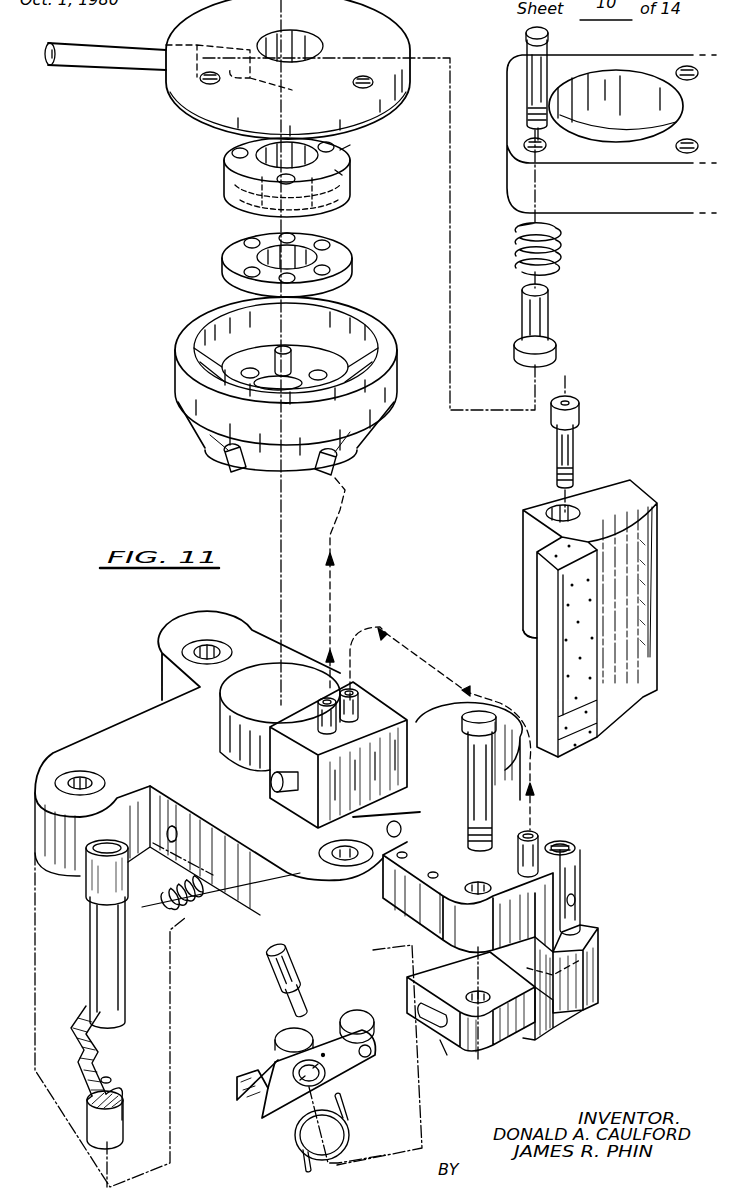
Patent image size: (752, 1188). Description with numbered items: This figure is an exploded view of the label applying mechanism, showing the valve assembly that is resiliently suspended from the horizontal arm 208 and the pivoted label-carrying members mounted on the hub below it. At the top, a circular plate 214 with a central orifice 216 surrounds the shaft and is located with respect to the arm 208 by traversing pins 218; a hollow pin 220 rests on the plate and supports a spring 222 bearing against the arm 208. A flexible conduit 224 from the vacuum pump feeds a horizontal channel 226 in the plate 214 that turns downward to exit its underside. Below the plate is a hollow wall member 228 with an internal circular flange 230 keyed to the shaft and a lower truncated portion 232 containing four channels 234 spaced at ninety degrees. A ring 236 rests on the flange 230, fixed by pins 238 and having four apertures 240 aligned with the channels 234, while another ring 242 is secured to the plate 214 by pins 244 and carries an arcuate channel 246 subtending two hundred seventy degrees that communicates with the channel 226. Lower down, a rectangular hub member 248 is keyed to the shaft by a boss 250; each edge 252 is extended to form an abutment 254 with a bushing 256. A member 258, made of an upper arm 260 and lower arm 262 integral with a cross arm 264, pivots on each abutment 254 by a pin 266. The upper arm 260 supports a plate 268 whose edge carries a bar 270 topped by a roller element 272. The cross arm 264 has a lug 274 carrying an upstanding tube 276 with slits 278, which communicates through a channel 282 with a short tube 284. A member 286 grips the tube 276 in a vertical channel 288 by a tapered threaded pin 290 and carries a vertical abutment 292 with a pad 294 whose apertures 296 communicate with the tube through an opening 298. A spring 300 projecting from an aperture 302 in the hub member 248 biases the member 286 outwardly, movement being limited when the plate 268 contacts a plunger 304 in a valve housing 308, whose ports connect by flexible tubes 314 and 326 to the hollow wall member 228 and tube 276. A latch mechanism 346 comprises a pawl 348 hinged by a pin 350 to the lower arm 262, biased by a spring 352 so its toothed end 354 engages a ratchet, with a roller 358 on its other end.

The horizontal arm 208 is at (645, 195).
The circular plate 214 is at (172, 108).
The central orifice 216 is at (318, 40).
The traversing pin 218 is at (550, 65).
The hollow pin 220 is at (545, 318).
The spring 222 is at (555, 265).
The flexible conduit 224 is at (110, 62).
The horizontal channel 226 is at (269, 73).
The hollow wall member 228 is at (172, 402).
The circular flange 230 is at (225, 345).
The truncated portion 232 is at (268, 478).
The channels 234 is at (320, 365).
The ring 236 is at (218, 258).
The pins 238 is at (300, 360).
The apertures 240 is at (245, 272).
The ring 242 is at (220, 172).
The pins 244 is at (360, 140).
The arcuate channel 246 is at (238, 205).
The hub member 248 is at (155, 724).
The boss 250 is at (225, 733).
The edge 252 is at (82, 742).
The abutment 254 is at (46, 770).
The bushing 256 is at (97, 772).
The member 258 is at (597, 1022).
The upper arm 260 is at (382, 901).
The lower arm 262 is at (495, 1040).
The cross arm 264 is at (543, 1012).
The pin 266 is at (470, 742).
The plate 268 is at (62, 1070).
The bar 270 is at (118, 975).
The roller element 272 is at (98, 880).
The lug 274 is at (592, 1012).
The upstanding tube 276 is at (581, 880).
The slits 278 is at (573, 850).
The channel 282 is at (600, 968).
The short tube 284 is at (535, 835).
The member 286 is at (518, 527).
The vertical channel 288 is at (572, 508).
The tapered threaded pin 290 is at (575, 438).
The abutment 292 is at (548, 663).
The pad 294 is at (572, 625).
The apertures 296 is at (572, 705).
The opening 298 is at (577, 900).
The spring 300 is at (192, 902).
The aperture 302 is at (438, 871).
The plunger 304 is at (284, 793).
The valve housing 308 is at (265, 767).
The flexible tube 314 is at (322, 698).
The flexible tube 326 is at (360, 700).
The latch mechanism 346 is at (255, 1100).
The pawl 348 is at (343, 1062).
The pin 350 is at (272, 975).
The spring 352 is at (296, 1145).
The toothed end 354 is at (248, 1080).
The roller 358 is at (347, 1012).